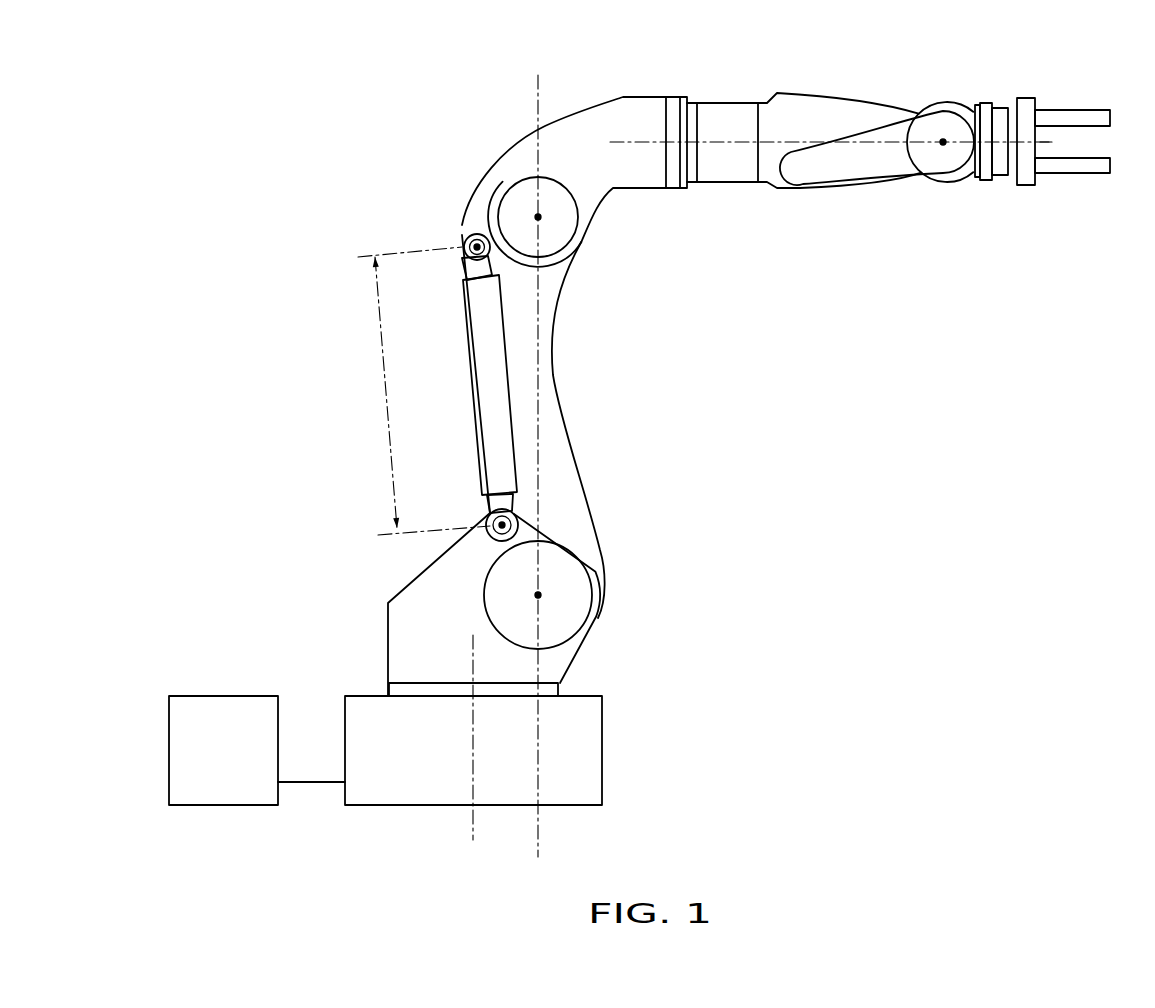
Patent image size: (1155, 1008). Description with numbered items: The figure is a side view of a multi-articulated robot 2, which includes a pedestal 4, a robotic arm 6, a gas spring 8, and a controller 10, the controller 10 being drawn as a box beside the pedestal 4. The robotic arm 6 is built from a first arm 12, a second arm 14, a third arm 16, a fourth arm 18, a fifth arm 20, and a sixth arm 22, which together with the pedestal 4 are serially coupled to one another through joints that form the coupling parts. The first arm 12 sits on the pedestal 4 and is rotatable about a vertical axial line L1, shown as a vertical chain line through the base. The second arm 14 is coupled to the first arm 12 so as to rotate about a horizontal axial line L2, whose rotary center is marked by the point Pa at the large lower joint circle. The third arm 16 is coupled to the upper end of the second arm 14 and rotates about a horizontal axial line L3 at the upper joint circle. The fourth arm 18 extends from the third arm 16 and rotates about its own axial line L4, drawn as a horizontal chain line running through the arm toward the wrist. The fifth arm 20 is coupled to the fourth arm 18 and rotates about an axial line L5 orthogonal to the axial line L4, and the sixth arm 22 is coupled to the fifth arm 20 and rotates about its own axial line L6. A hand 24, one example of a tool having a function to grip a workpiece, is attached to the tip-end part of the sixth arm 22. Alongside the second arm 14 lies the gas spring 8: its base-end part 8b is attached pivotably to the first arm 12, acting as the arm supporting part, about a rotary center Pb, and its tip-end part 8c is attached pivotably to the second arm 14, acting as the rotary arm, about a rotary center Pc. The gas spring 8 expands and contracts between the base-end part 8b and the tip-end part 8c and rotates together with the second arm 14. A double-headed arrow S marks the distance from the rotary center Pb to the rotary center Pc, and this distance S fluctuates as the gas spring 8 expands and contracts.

The robot 2 is at (173, 111).
The pedestal 4 is at (587, 752).
The robotic arm 6 is at (737, 470).
The gas spring 8 is at (480, 375).
The base-end part 8b is at (488, 519).
The tip-end part 8c is at (462, 257).
The controller 10 is at (227, 710).
The first arm 12 is at (418, 598).
The second arm 14 is at (563, 473).
The third arm 16 is at (590, 137).
The fourth arm 18 is at (820, 107).
The fifth arm 20 is at (976, 103).
The sixth arm 22 is at (1013, 170).
The hand 24 is at (1038, 183).
The vertical axial line L1 is at (473, 660).
The horizontal axial line L2 is at (538, 595).
The horizontal axial line L3 is at (538, 217).
The axial line L4 is at (725, 140).
The axial line L5 is at (943, 142).
The axial line L6 is at (1052, 140).
The rotary center Pa is at (538, 595).
The rotary center Pb is at (517, 522).
The rotary center Pc is at (462, 235).
The distance S is at (424, 391).